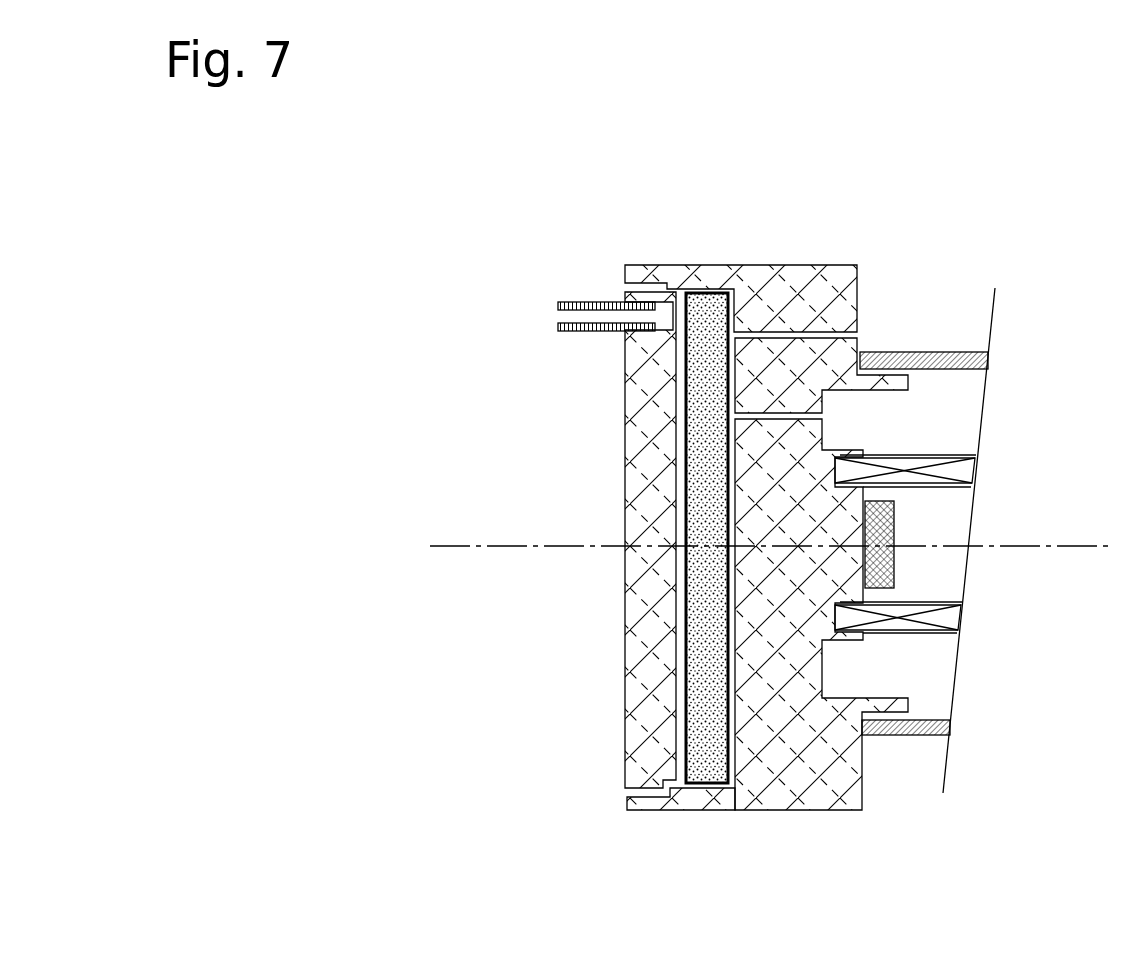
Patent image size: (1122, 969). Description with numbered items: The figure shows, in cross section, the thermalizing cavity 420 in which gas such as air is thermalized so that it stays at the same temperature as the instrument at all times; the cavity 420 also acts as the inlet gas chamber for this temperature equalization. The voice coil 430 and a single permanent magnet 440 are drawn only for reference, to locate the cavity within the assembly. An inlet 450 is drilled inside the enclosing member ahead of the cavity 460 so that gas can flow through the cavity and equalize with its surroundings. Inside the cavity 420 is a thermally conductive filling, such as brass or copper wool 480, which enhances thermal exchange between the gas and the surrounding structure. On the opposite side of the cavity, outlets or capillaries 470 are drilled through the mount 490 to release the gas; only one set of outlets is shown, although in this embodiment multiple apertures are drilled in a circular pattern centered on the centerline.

The thermalizing cavity 420 is at (700, 790).
The voice coil 430 is at (935, 452).
The permanent magnet 440 is at (894, 527).
The inlet 450 is at (555, 320).
The cavity 460 is at (650, 497).
The outlets 470 is at (882, 328).
The copper wool 480 is at (705, 340).
The mount 490 is at (839, 775).